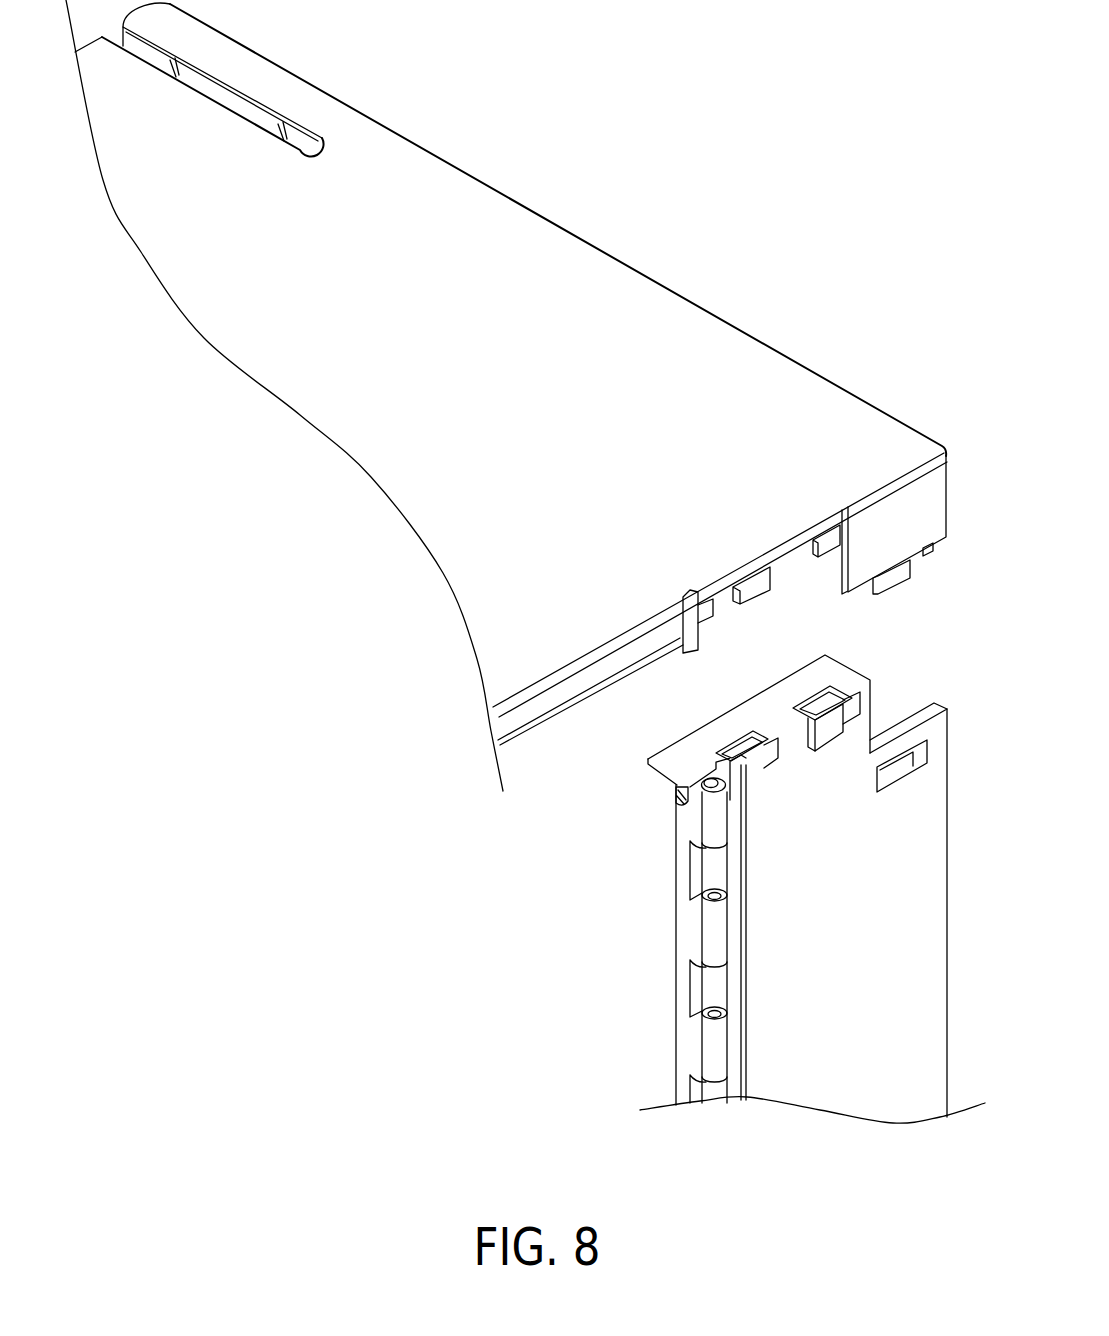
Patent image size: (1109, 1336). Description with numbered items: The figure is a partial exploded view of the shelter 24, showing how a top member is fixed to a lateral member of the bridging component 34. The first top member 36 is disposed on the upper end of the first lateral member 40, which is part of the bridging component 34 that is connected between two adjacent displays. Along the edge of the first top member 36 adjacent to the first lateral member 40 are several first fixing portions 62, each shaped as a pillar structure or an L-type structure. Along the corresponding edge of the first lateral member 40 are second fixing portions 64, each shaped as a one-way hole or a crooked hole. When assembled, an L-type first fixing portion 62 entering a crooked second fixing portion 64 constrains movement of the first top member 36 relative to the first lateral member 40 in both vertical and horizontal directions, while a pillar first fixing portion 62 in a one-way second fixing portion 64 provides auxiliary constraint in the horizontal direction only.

The shelter 24 is at (938, 328).
The first top member 36 is at (850, 435).
The first fixing portion 62 is at (700, 605).
The second fixing portion 64 is at (818, 700).
The first lateral member 40 is at (855, 1050).
The bridging component 34 is at (812, 923).